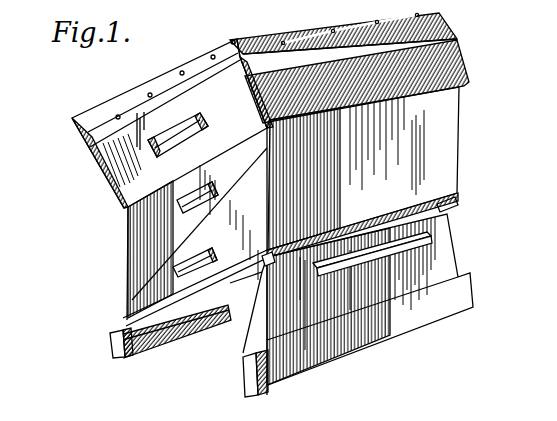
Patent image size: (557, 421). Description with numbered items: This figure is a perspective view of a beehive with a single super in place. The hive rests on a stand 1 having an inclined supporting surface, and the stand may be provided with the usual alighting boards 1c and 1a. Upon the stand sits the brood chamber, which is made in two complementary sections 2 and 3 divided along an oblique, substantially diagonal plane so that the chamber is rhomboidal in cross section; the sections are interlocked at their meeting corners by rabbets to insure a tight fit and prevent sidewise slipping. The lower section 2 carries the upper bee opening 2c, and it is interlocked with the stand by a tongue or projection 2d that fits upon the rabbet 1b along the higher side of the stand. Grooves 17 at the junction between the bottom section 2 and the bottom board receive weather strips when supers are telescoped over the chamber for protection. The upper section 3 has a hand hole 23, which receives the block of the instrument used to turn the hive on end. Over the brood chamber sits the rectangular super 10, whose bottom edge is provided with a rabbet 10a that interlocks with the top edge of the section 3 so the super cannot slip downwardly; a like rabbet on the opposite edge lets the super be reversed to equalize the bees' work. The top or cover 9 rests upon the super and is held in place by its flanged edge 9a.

The stand 1 is at (392, 297).
The alighting board 1a is at (393, 242).
The rabbet 1b is at (253, 275).
The alighting board 1c is at (110, 343).
The lower section of brood chamber 2 is at (455, 128).
The upper bee opening 2c is at (410, 214).
The tongue 2d is at (272, 263).
The upper section of brood chamber 3 is at (454, 100).
The top or cover 9 is at (197, 78).
The flanged edge 9a is at (434, 32).
The super 10 is at (115, 168).
The rabbet 10a is at (394, 98).
The grooves 17 is at (124, 318).
The hand hole 23 is at (229, 205).